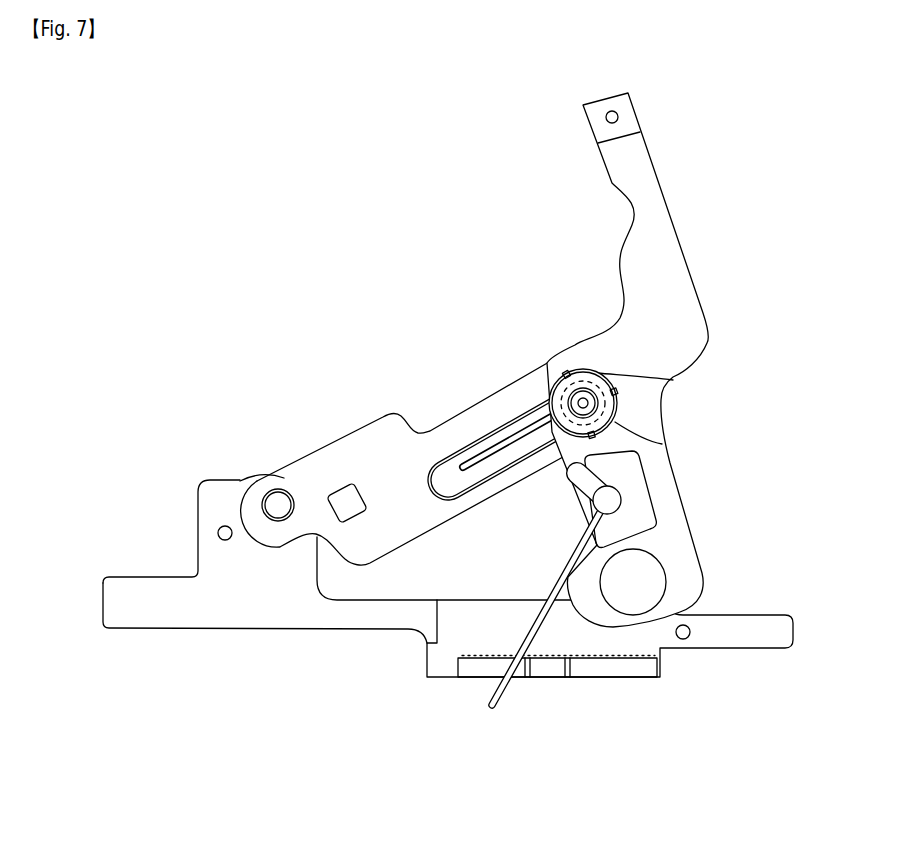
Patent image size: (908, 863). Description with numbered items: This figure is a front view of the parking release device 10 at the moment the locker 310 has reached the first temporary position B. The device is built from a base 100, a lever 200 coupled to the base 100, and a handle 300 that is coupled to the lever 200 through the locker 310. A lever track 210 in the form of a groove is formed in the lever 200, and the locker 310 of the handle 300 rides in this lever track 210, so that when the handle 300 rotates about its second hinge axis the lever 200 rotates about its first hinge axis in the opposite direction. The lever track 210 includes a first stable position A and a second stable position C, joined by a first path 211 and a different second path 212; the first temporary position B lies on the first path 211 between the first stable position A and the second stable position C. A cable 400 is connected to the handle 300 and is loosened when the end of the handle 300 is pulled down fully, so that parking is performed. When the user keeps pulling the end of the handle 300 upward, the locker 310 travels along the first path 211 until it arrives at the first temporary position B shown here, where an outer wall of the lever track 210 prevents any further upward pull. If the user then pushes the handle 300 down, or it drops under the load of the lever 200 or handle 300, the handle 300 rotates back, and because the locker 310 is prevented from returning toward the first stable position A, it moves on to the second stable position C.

The parking release device 10 is at (226, 314).
The base 100 is at (222, 613).
The lever 200 is at (412, 441).
The lever track 210 is at (515, 398).
The first path 211 is at (497, 463).
The second path 212 is at (530, 400).
The handle 300 is at (678, 292).
The locker 310 is at (597, 403).
The cable 400 is at (500, 687).
The first stable position A is at (452, 487).
The first temporary position B is at (662, 444).
The second stable position C is at (683, 375).